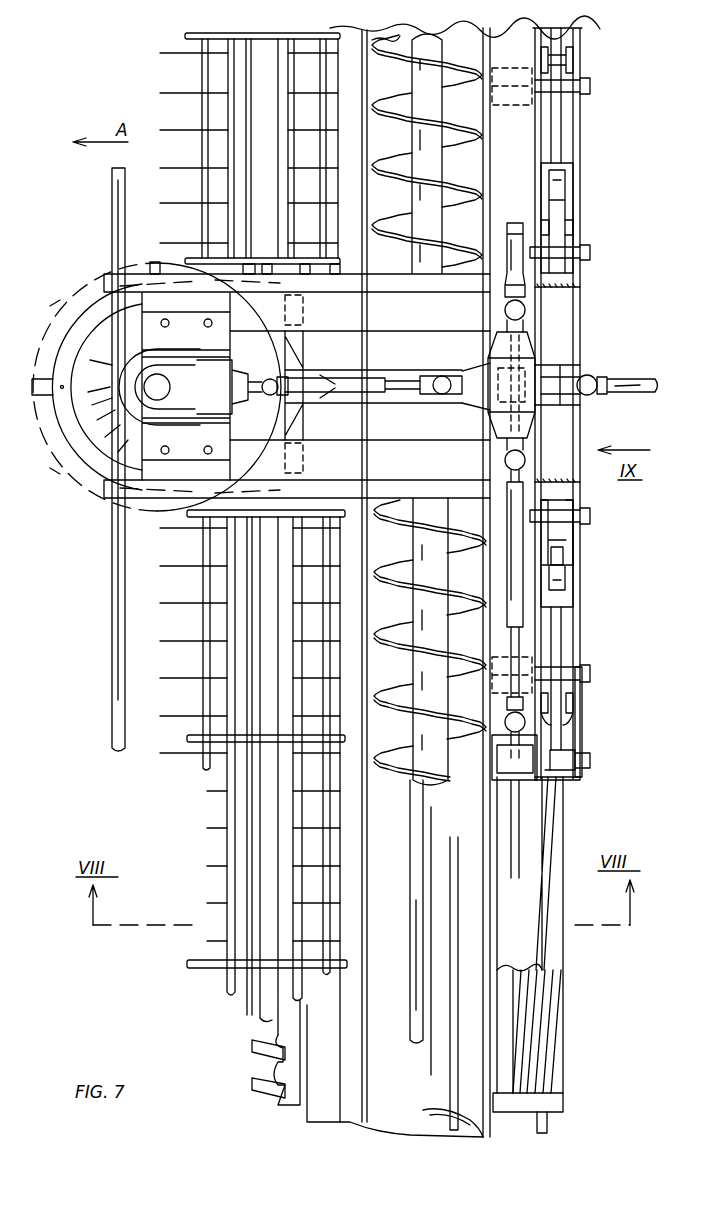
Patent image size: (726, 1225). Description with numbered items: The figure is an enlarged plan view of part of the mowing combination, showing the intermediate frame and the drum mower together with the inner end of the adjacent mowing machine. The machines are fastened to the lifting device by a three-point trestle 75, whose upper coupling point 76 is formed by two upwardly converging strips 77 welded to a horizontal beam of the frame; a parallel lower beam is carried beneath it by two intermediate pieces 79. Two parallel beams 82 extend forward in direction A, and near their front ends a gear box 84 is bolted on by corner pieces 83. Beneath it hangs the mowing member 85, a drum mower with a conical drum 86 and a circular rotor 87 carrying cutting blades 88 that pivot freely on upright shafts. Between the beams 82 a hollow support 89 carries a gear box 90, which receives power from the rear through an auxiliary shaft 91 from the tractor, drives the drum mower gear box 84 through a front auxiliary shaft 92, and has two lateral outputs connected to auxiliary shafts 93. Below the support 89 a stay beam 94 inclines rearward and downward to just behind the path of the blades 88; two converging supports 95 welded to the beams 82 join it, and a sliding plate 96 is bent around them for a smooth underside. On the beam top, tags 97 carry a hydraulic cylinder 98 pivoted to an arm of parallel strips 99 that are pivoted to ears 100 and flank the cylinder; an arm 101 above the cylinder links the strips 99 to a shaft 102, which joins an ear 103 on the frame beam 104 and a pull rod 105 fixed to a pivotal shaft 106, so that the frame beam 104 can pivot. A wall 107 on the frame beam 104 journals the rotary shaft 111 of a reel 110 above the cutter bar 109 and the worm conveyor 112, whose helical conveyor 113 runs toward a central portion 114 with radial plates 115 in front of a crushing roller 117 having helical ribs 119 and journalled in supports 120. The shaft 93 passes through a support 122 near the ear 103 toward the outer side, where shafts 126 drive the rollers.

The three-point trestle 75 is at (612, 334).
The upper coupling point 76 is at (580, 373).
The upwardly converging strips 77 is at (578, 442).
The intermediate pieces 79 is at (492, 102).
The beams 82 is at (380, 322).
The corner pieces 83 is at (142, 335).
The gear box 84 is at (122, 378).
The mowing member 85 is at (78, 279).
The conical drum 86 is at (92, 337).
The circular rotor 87 is at (80, 452).
The cutting blades 88 is at (35, 395).
The hollow support 89 is at (490, 340).
The gear box 90 is at (490, 406).
The auxiliary shaft 91 is at (632, 380).
The auxiliary shaft 92 is at (412, 391).
The auxiliary shafts 93 is at (515, 222).
The stay beam 94 is at (353, 404).
The downwardly converging supports 95 is at (300, 344).
The sliding plate 96 is at (310, 366).
The tags 97 is at (548, 730).
The hydraulic cylinder 98 is at (562, 200).
The strips 99 is at (545, 236).
The ears 100 is at (588, 253).
The arm 101 is at (560, 160).
The shaft 102 is at (588, 762).
The ear 103 is at (553, 772).
The frame beam 104 is at (485, 166).
The pull rod 105 is at (580, 50).
The pivotal shaft 106 is at (588, 86).
The wall 107 is at (140, 273).
The cutter bar 109 is at (262, 1060).
The reel 110 is at (185, 36).
The rotary shaft 111 is at (247, 64).
The worm conveyor 112 is at (404, 62).
The helical conveyor 113 is at (480, 73).
The portion 114 is at (455, 835).
The radially extending plates 115 is at (458, 912).
The crushing roller 117 is at (565, 1032).
The helical ribs 119 is at (560, 1062).
The supports 120 is at (565, 1106).
The support 122 is at (492, 766).
The shafts 126 is at (548, 1130).